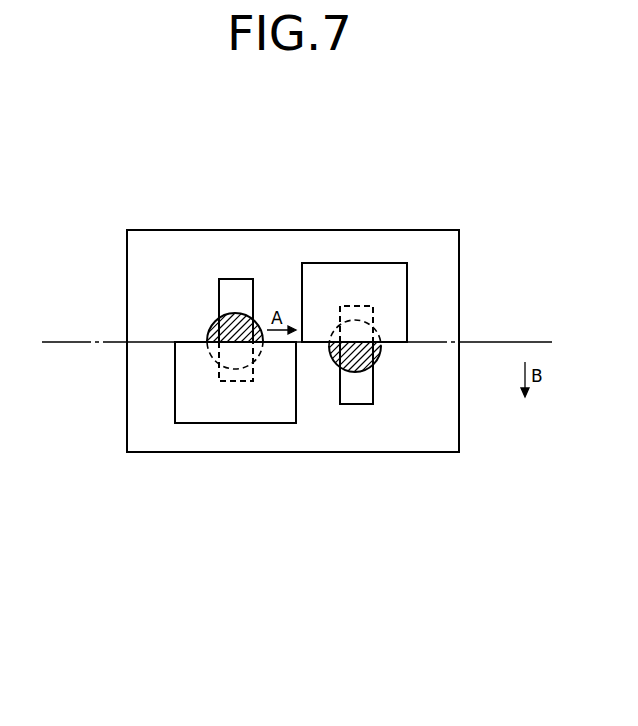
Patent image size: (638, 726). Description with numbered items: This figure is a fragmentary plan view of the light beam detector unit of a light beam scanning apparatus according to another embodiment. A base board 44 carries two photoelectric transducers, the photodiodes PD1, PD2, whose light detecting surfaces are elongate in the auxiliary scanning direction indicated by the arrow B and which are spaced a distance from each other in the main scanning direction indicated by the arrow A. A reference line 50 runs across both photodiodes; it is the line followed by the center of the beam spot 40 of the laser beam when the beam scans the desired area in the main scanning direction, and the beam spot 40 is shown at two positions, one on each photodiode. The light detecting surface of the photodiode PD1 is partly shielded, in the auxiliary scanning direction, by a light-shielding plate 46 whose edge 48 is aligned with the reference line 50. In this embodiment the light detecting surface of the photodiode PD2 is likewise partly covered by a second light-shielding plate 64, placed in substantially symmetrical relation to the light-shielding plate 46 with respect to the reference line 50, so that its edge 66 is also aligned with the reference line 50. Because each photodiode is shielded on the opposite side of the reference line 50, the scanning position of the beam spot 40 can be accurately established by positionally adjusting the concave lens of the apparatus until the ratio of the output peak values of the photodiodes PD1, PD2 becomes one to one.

The beam spot 40 is at (212, 333).
The base board 44 is at (438, 247).
The light-shielding plate 46 is at (231, 414).
The edge of light-shielding plate 48 is at (187, 343).
The reference line 50 is at (534, 340).
The light-shielding plate 64 is at (401, 292).
The edge of light-shielding plate 66 is at (388, 343).
The photodiode PD1 is at (245, 287).
The photodiode PD2 is at (352, 404).